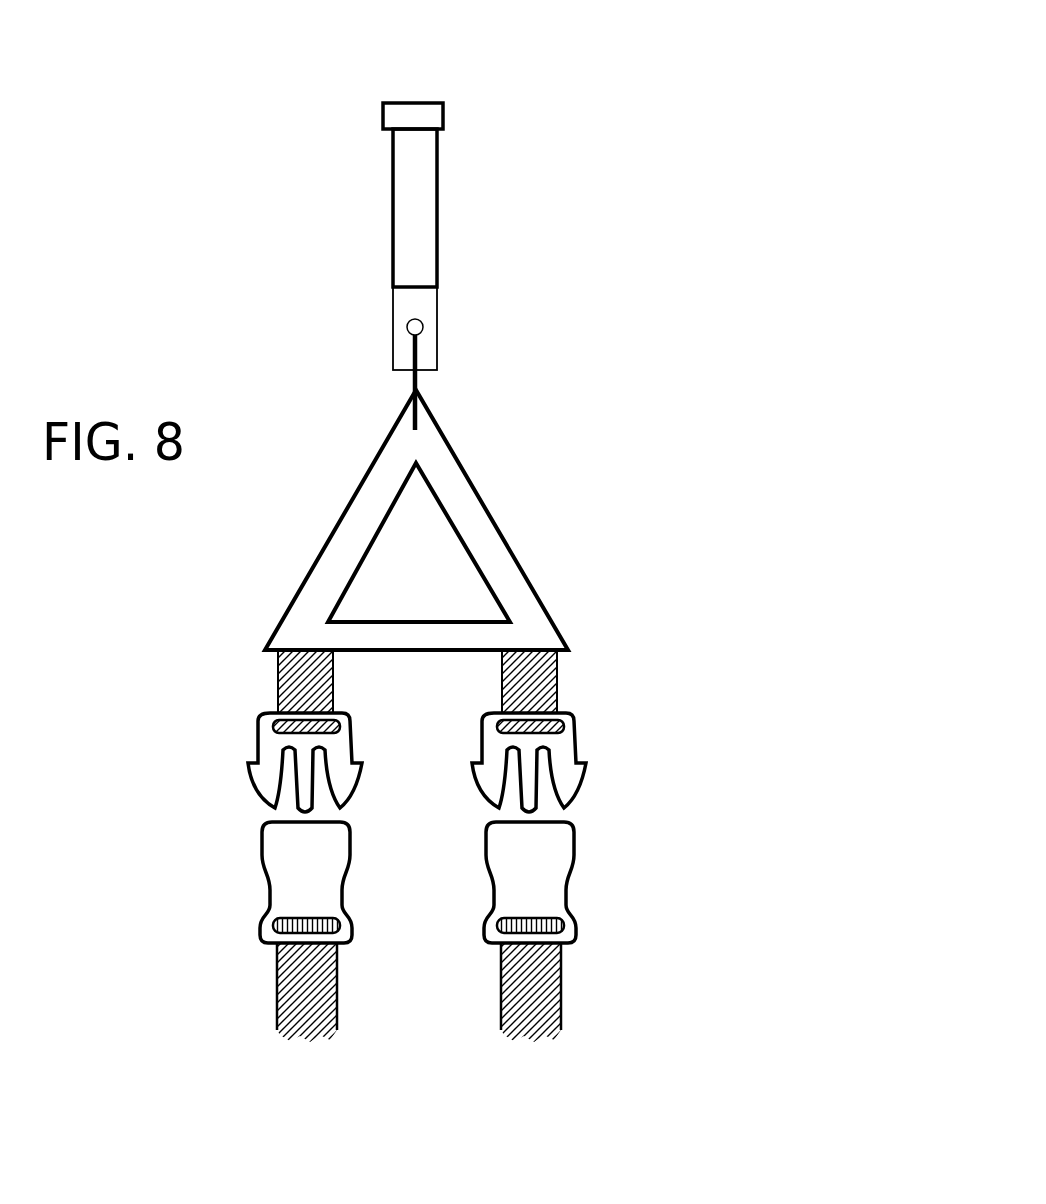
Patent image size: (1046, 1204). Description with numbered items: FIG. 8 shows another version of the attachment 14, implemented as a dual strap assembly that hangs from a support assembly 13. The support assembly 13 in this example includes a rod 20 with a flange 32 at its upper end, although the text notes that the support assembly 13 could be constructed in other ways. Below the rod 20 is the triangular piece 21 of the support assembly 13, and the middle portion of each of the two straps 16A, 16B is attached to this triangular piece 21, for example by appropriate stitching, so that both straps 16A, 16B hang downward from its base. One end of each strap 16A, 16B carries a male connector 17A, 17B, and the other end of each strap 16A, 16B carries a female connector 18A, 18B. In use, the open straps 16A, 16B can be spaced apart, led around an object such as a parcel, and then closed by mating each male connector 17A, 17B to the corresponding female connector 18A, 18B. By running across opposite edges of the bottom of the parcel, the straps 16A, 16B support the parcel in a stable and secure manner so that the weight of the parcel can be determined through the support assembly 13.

The support assembly 13 is at (130, 262).
The attachment 14 is at (645, 655).
The rod 20 is at (392, 208).
The flange 32 is at (440, 106).
The triangular piece 21 is at (520, 558).
The male connector 17A is at (257, 723).
The male connector 17B is at (573, 732).
The female connector 18A is at (260, 845).
The female connector 18B is at (573, 843).
The strap 16A is at (270, 973).
The strap 16B is at (560, 993).